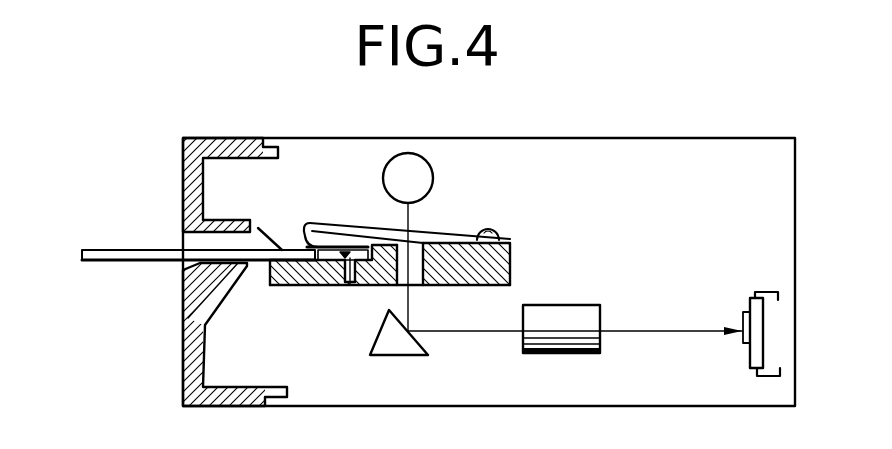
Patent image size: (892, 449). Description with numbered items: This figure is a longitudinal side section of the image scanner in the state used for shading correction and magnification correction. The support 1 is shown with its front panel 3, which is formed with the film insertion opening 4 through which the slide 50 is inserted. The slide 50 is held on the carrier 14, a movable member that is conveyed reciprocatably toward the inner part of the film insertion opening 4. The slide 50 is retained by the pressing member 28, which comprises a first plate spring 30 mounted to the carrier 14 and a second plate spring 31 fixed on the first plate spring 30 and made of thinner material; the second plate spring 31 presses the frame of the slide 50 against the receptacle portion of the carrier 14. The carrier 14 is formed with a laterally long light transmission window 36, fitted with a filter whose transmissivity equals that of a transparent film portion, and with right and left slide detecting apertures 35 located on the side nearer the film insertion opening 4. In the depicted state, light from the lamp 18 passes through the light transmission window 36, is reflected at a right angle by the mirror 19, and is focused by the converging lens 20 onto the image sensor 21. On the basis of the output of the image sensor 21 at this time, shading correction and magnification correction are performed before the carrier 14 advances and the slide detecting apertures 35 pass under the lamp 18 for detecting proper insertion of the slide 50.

The support 1 is at (216, 137).
The front panel 3 is at (188, 170).
The film insertion opening 4 is at (193, 238).
The slide 50 is at (98, 252).
The carrier 14 is at (470, 257).
The light transmission window 36 is at (418, 255).
The first plate spring 30 is at (338, 223).
The pressing member 28 is at (360, 230).
The second plate spring 31 is at (292, 245).
The lamp 18 is at (408, 165).
The slide detecting aperture 35 is at (352, 285).
The mirror 19 is at (403, 343).
The converging lens 20 is at (570, 348).
The image sensor 21 is at (743, 345).